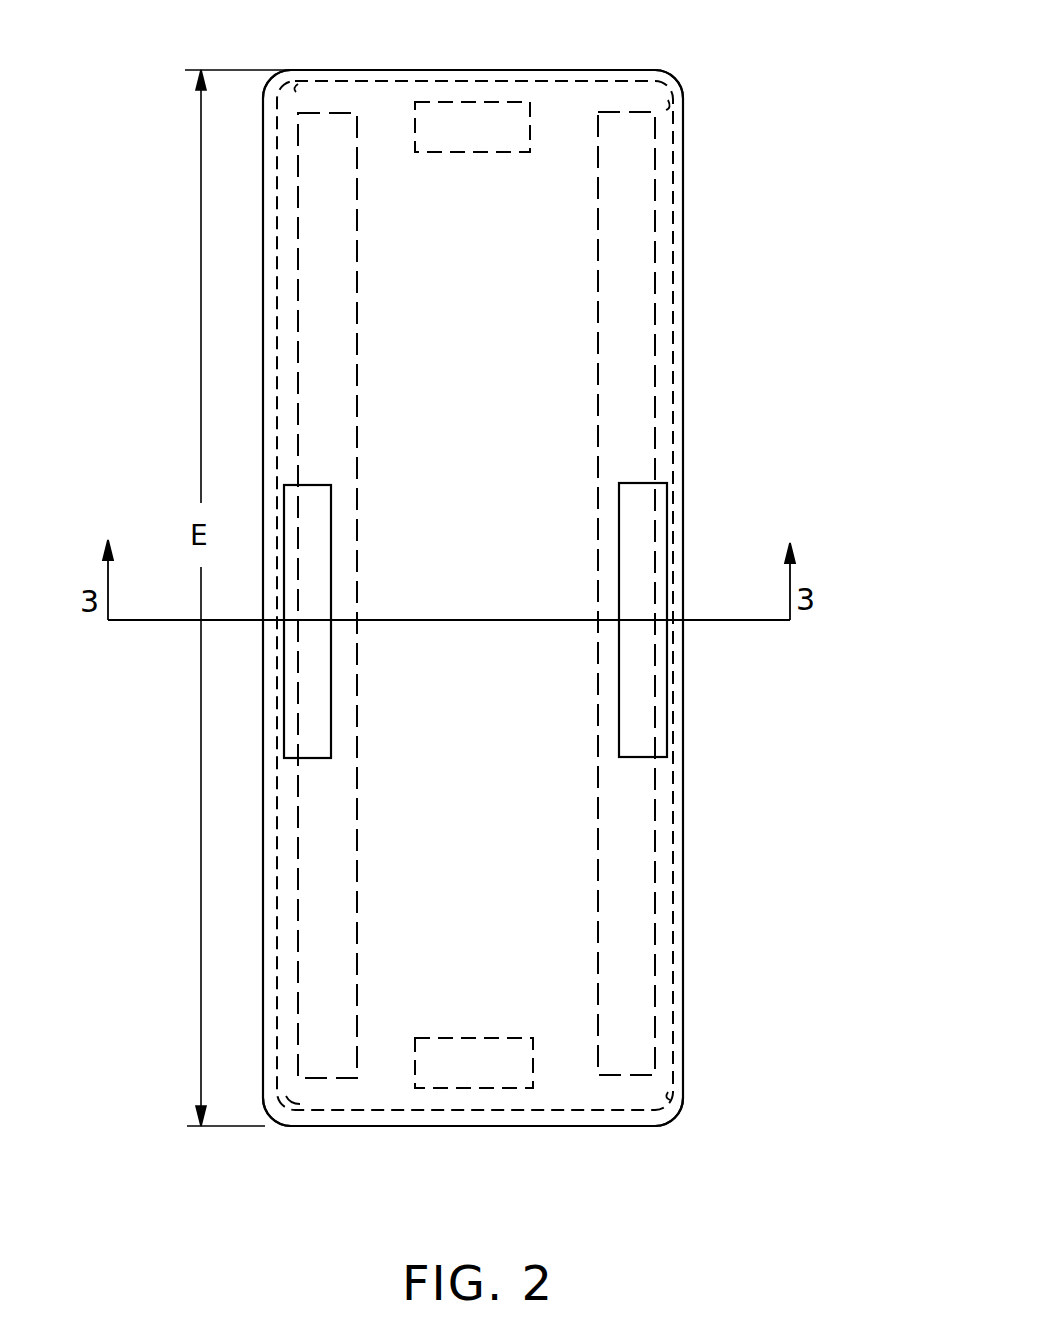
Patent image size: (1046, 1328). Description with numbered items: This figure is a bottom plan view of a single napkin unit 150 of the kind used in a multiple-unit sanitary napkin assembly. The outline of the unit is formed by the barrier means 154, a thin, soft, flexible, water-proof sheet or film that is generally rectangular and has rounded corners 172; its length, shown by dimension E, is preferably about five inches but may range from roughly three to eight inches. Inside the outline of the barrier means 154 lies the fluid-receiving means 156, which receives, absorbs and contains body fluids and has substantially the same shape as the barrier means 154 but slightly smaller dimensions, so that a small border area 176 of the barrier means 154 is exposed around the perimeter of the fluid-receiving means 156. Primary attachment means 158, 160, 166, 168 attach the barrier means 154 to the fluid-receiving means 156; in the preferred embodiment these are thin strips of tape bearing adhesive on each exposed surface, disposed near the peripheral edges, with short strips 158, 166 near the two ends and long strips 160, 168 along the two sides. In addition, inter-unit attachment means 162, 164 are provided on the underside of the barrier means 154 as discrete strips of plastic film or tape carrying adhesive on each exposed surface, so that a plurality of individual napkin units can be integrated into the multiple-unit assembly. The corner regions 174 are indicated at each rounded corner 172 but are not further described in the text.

The napkin unit 150 is at (656, 64).
The barrier means 154 is at (455, 70).
The fluid-receiving means 156 is at (276, 108).
The primary attachment means 158 is at (449, 153).
The primary attachment means 160 is at (598, 678).
The inter-unit attachment means 162 is at (331, 735).
The inter-unit attachment means 164 is at (619, 718).
The primary attachment means 166 is at (486, 1038).
The primary attachment means 168 is at (357, 527).
The rounded corners 172 is at (284, 73).
The inner corner 174 is at (296, 90).
The border area 176 is at (522, 1128).